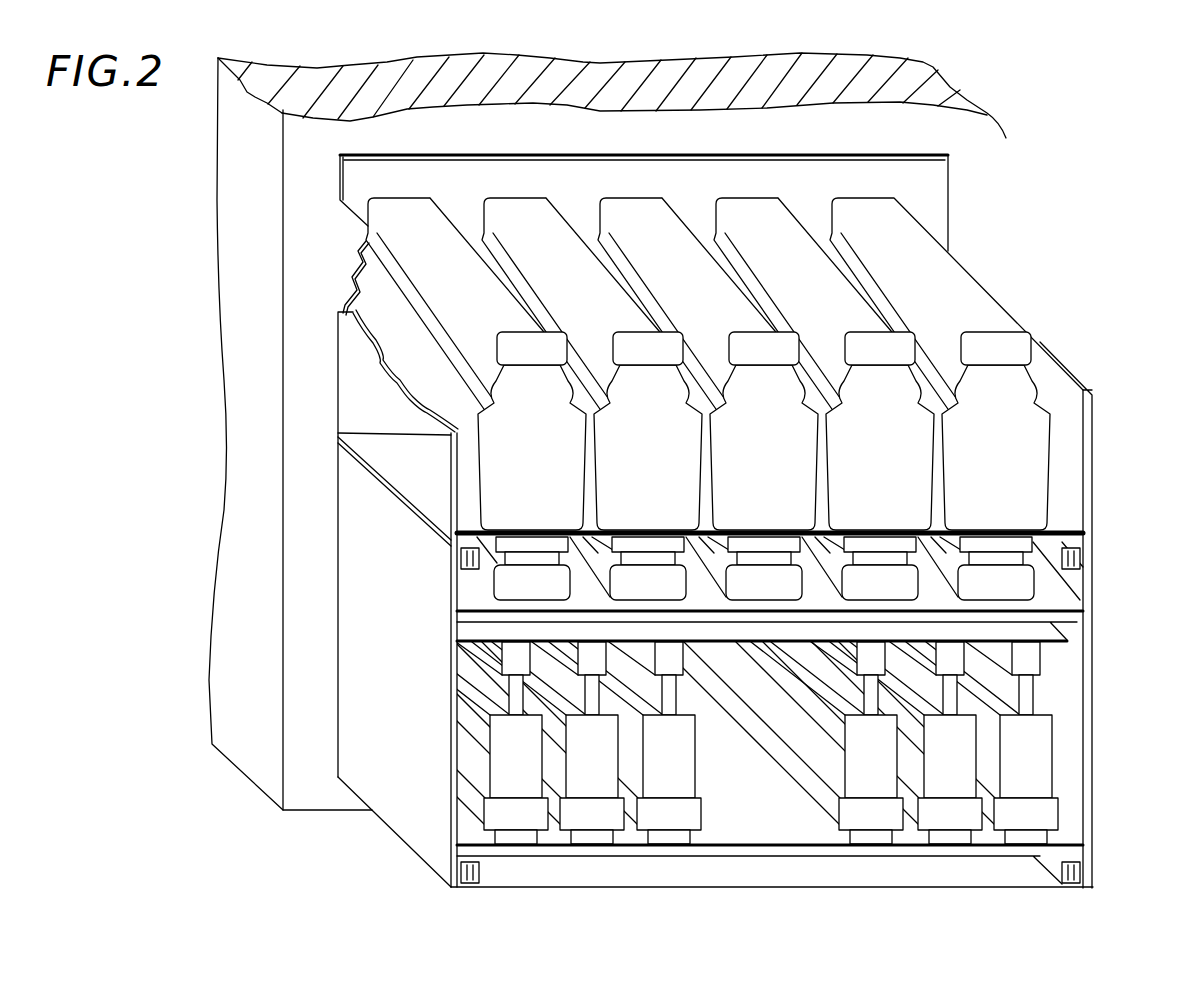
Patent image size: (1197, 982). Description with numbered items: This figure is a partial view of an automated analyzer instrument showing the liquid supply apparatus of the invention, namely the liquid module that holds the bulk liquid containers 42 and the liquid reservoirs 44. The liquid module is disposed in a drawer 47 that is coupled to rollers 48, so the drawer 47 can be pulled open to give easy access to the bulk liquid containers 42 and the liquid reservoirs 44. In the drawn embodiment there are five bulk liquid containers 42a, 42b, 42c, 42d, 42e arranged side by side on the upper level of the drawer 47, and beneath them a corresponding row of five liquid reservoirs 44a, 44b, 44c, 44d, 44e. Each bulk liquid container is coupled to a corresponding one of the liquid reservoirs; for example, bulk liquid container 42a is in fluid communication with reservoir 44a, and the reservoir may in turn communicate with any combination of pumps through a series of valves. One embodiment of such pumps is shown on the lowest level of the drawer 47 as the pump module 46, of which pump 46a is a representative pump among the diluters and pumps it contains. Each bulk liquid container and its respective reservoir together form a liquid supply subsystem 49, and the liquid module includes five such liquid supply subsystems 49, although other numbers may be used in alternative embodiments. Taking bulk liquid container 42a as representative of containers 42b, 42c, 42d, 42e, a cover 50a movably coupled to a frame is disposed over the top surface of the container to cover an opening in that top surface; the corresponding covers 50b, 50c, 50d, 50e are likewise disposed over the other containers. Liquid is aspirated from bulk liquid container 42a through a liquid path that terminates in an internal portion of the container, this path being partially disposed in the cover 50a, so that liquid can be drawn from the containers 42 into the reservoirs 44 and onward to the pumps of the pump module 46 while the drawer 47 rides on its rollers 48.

The bulk liquid containers 42 is at (1052, 390).
The bulk liquid container 42a is at (559, 473).
The bulk liquid container 42b is at (672, 468).
The bulk liquid container 42c is at (788, 477).
The bulk liquid container 42d is at (905, 469).
The bulk liquid container 42e is at (1028, 480).
The liquid reservoirs 44 is at (1068, 585).
The liquid reservoir 44a is at (559, 593).
The liquid reservoir 44b is at (672, 593).
The liquid reservoir 44c is at (788, 593).
The liquid reservoir 44d is at (905, 593).
The liquid reservoir 44e is at (1023, 593).
The pump module 46 is at (1108, 696).
The pump 46a is at (540, 760).
The drawer 47 is at (1093, 486).
The rollers 48 is at (470, 575).
The liquid supply subsystem 49 is at (212, 484).
The cover 50a is at (500, 302).
The cover 50b is at (605, 292).
The cover 50c is at (725, 297).
The cover 50d is at (833, 290).
The cover 50e is at (969, 300).